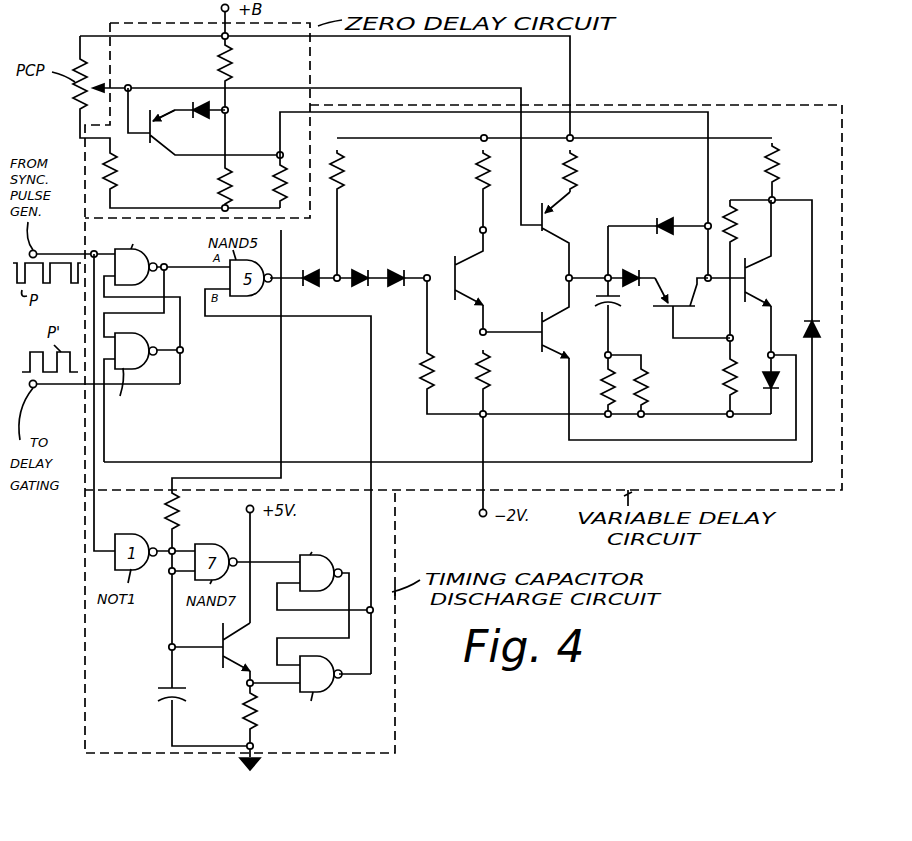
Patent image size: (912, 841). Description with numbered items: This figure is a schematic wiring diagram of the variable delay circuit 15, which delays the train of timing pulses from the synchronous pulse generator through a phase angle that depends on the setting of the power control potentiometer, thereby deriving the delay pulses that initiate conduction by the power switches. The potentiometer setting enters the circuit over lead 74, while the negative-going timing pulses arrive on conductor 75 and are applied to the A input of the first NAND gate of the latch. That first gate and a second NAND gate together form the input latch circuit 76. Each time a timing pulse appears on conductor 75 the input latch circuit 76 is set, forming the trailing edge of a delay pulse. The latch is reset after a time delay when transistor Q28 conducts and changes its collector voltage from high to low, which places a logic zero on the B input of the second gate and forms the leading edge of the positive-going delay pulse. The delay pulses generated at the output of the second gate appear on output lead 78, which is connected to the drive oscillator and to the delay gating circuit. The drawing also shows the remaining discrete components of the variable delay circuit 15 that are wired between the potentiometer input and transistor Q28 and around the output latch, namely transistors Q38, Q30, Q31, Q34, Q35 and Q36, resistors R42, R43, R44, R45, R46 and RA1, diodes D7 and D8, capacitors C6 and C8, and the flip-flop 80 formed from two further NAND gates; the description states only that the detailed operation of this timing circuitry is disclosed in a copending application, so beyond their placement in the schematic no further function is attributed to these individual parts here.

The variable delay circuit 15 is at (168, 345).
The lead 74 is at (272, 84).
The conductor 75 is at (50, 247).
The input latch circuit 76 is at (132, 342).
The output lead 78 is at (40, 394).
The NAND8/NAND6 flip-flop 80 is at (309, 627).
The transistor Q38 is at (206, 146).
The resistor R42 is at (575, 183).
The resistor R43 is at (722, 382).
The resistor R44 is at (731, 211).
The resistor R45 is at (782, 170).
The resistor R46 is at (182, 511).
The resistor RA1 is at (606, 418).
The transistor Q30 is at (453, 262).
The transistor Q31 is at (542, 316).
The transistor Q34 is at (540, 258).
The transistor Q35 is at (691, 308).
The transistor Q28 is at (757, 284).
The transistor Q36 is at (224, 654).
The diode D7 is at (766, 372).
The diode D8 is at (630, 272).
The capacitor C6 is at (611, 310).
The timing capacitor C8 is at (160, 688).